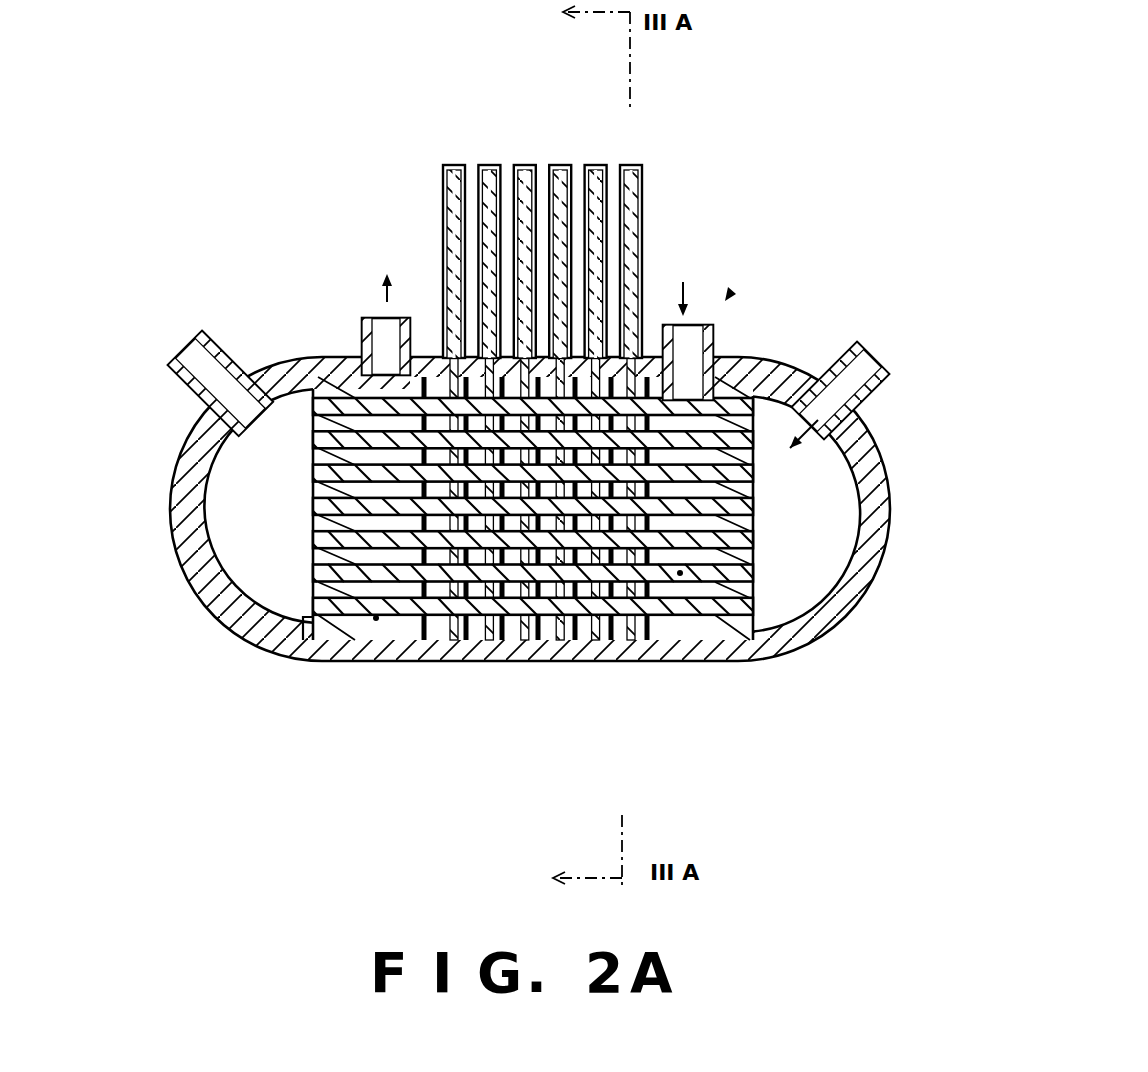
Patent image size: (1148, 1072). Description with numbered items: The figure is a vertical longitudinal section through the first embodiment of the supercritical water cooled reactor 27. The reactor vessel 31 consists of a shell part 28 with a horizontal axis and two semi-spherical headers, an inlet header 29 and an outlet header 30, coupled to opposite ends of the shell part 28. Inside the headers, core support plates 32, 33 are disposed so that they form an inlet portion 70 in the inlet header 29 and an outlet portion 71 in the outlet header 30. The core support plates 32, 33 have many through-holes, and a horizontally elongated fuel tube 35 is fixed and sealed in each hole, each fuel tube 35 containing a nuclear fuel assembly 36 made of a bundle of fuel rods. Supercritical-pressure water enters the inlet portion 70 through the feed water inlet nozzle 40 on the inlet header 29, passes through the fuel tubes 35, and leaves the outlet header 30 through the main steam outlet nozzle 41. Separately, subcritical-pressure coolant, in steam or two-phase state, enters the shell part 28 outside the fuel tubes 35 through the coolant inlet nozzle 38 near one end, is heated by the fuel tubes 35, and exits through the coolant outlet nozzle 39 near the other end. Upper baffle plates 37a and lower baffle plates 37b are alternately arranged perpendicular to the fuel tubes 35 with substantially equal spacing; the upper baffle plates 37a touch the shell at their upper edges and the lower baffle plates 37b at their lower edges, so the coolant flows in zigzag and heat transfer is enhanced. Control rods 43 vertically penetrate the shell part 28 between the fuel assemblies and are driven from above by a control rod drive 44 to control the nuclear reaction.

The supercritical water cooled reactor 27 is at (542, 125).
The shell part 28 is at (518, 620).
The inlet header 29 is at (877, 504).
The outlet header 30 is at (170, 520).
The reactor vessel 31 is at (727, 296).
The core support plate 32 is at (757, 503).
The core support plate 33 is at (312, 492).
The fuel tube 35 is at (376, 620).
The nuclear fuel assembly 36 is at (680, 573).
The upper baffle plate 37a is at (403, 620).
The lower baffle plate 37b is at (477, 620).
The coolant inlet nozzle 38 is at (685, 343).
The coolant outlet nozzle 39 is at (378, 345).
The feed water inlet nozzle 40 is at (880, 395).
The main steam outlet nozzle 41 is at (190, 352).
The control rod 43 is at (437, 357).
The control rod drive 44 is at (643, 196).
The inlet portion 70 is at (823, 573).
The outlet portion 71 is at (250, 578).